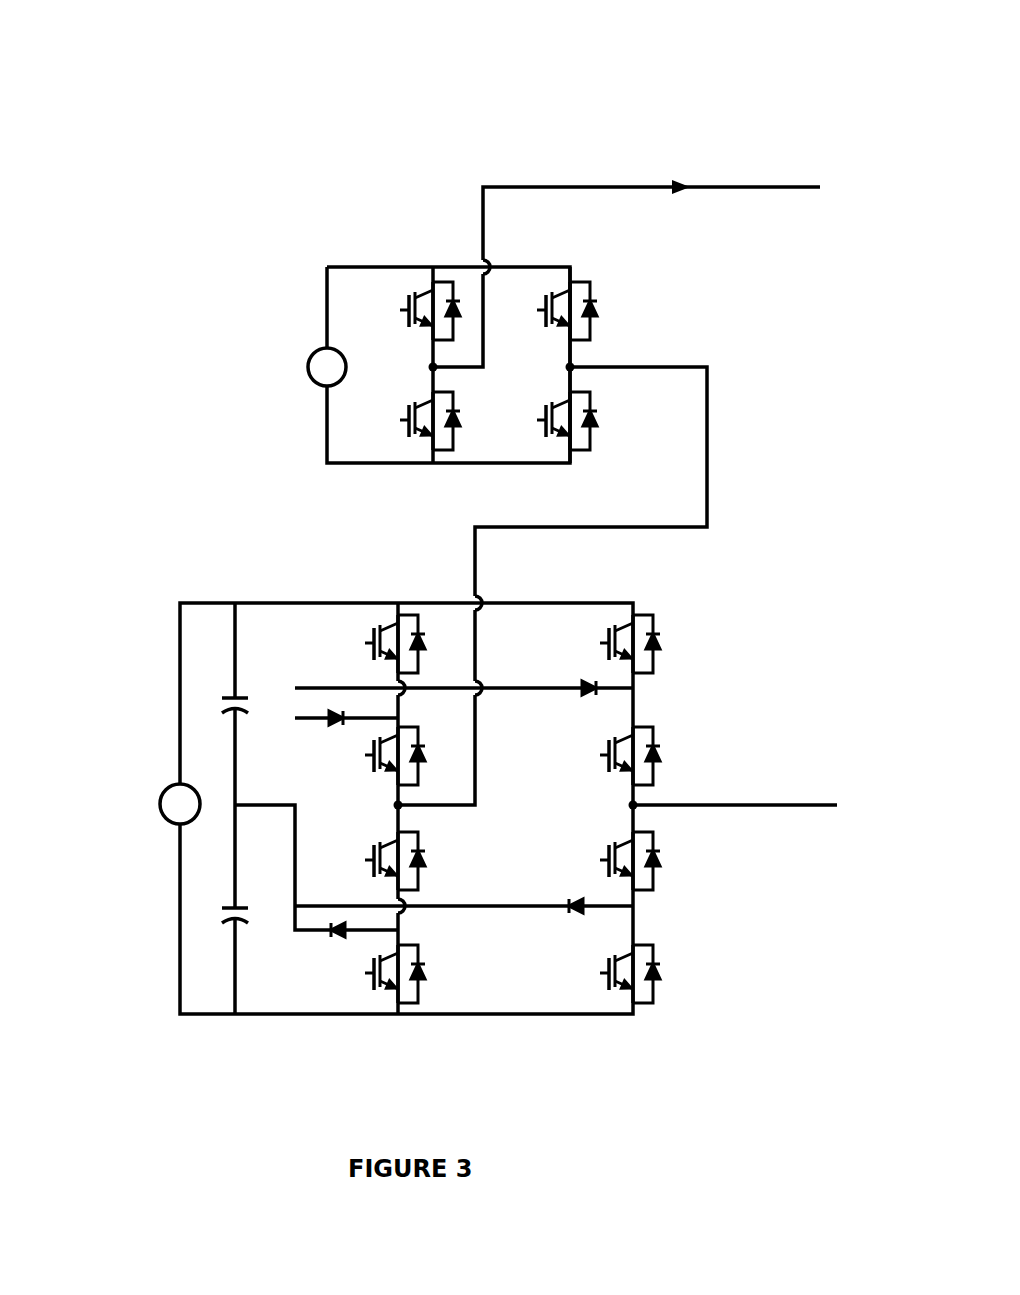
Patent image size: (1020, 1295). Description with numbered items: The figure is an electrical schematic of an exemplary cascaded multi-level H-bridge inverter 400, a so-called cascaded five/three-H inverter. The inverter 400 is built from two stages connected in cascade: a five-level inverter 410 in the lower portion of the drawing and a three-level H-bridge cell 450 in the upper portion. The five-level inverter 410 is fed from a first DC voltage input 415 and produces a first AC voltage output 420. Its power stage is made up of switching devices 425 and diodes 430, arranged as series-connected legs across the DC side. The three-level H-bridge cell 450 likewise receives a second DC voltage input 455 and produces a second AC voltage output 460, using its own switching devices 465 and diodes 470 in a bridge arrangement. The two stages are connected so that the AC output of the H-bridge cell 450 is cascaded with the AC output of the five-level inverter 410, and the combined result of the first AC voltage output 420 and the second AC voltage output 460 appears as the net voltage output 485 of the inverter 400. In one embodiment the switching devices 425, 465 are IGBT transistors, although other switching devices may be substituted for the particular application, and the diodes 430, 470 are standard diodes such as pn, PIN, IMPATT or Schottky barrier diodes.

The cascaded multi-level H-bridge inverter 400 is at (468, 92).
The 5-level inverter 410 is at (175, 603).
The first DC voltage input 415 is at (137, 800).
The first AC voltage output 420 is at (712, 668).
The switching devices 425 is at (368, 640).
The diodes 430 is at (425, 855).
The 3-level H-bridge cell 450 is at (315, 257).
The second DC voltage input 455 is at (267, 352).
The second AC voltage output 460 is at (655, 290).
The switching devices 465 is at (412, 300).
The diodes 470 is at (583, 420).
The net voltage output 485 is at (817, 467).